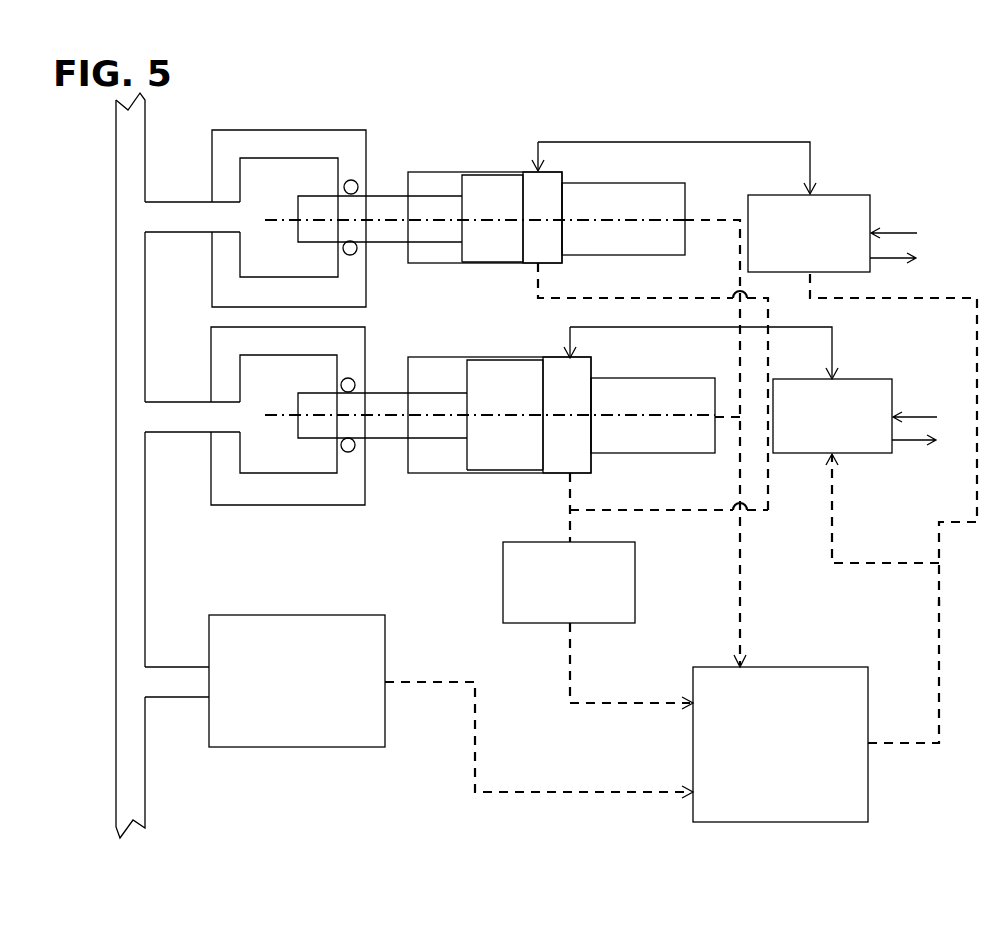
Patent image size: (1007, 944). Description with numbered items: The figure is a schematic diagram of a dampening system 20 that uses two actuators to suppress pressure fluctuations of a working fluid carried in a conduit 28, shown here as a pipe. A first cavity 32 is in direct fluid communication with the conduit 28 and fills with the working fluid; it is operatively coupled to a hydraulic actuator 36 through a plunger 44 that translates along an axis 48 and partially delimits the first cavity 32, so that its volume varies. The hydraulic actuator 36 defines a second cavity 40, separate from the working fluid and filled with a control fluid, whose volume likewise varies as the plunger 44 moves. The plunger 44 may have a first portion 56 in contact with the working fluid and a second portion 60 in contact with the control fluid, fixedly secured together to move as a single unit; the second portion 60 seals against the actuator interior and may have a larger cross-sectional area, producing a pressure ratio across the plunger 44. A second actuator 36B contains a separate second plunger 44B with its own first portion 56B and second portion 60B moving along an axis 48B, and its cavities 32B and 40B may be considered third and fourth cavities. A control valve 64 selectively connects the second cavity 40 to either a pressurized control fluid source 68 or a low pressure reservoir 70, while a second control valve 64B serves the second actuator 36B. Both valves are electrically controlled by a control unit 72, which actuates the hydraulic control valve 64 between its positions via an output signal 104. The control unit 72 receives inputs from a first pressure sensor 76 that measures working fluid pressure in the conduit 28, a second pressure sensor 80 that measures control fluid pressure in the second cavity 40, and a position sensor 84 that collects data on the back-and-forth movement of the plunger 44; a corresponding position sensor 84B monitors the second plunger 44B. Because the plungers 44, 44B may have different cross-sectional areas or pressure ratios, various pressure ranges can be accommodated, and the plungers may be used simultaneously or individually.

The dampening system 20 is at (626, 114).
The conduit 28 is at (125, 418).
The first cavity 32 is at (280, 475).
The third cavity 32B is at (281, 160).
The hydraulic actuator 36 is at (450, 475).
The second actuator 36B is at (468, 172).
The second cavity 40 is at (562, 350).
The fourth cavity 40B is at (529, 176).
The plunger 44 is at (457, 403).
The second plunger 44B is at (440, 205).
The axis 48 is at (387, 415).
The axis 48B is at (370, 217).
The first portion 56 is at (402, 410).
The first portion 56B is at (382, 213).
The second portion 60 is at (525, 462).
The second portion 60B is at (503, 243).
The control valve 64 is at (870, 453).
The second control valve 64B is at (840, 195).
The pressurized control fluid source 68 is at (919, 326).
The low pressure reservoir 70 is at (918, 351).
The control unit 72 is at (693, 729).
The first pressure sensor 76 is at (298, 746).
The second pressure sensor 80 is at (555, 625).
The position sensor 84 is at (645, 453).
The position sensor 84B is at (628, 255).
The output signal 104 is at (940, 603).